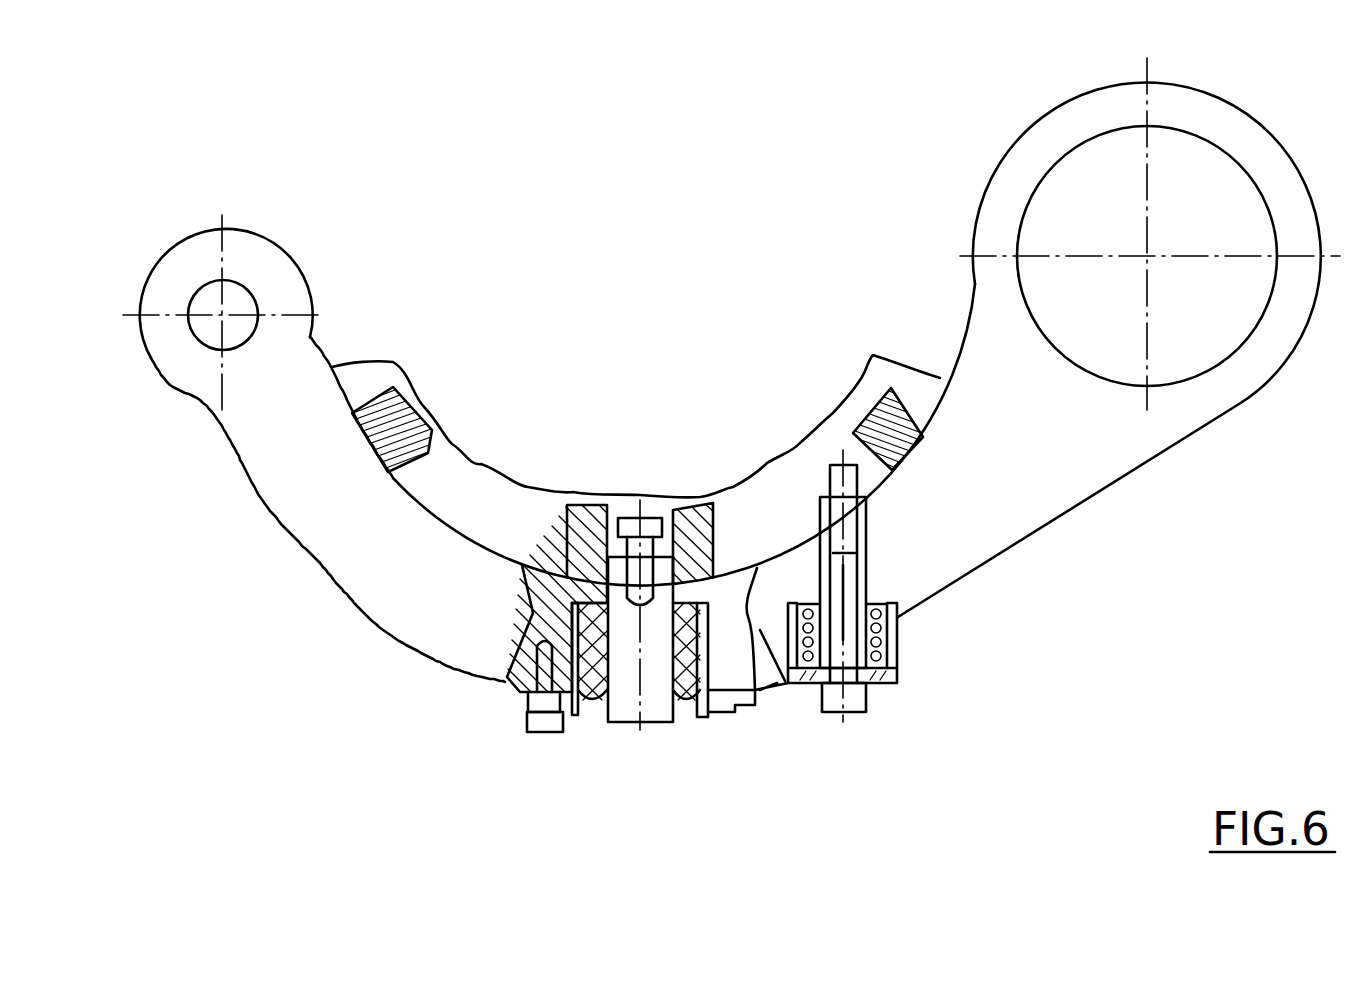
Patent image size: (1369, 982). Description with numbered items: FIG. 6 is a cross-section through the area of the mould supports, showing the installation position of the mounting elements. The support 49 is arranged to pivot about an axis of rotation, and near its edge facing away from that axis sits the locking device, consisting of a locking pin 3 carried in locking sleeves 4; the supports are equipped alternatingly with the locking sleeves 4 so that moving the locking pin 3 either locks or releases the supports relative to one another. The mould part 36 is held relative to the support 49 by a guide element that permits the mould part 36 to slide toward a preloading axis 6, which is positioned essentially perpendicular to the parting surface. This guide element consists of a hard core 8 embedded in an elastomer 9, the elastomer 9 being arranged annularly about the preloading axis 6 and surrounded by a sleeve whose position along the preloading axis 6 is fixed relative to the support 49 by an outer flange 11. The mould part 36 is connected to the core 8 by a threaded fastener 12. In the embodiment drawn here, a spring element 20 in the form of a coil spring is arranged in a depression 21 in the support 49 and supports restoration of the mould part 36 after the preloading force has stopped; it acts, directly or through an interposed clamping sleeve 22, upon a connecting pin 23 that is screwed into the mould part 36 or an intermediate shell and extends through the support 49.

The locking pin 3 is at (222, 317).
The locking sleeves 4 is at (190, 252).
The preloading axis 6 is at (642, 722).
The hard core 8 is at (1157, 249).
The elastomer 9 is at (685, 701).
The outer flange 11 is at (522, 702).
The threaded fastener 12 is at (630, 517).
The spring element 20 is at (897, 668).
The depression 21 is at (897, 617).
The clamping sleeve 22 is at (890, 683).
The connecting pin 23 is at (855, 716).
The mould part 36 is at (481, 458).
The support 49 is at (1212, 398).